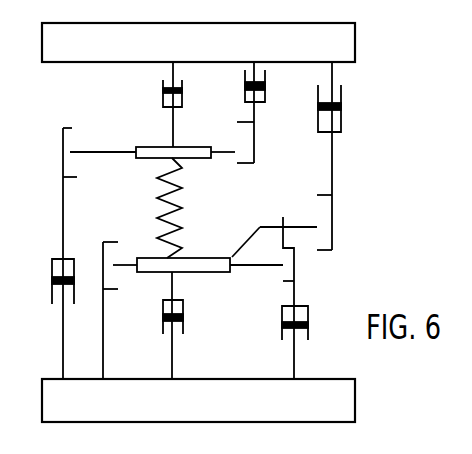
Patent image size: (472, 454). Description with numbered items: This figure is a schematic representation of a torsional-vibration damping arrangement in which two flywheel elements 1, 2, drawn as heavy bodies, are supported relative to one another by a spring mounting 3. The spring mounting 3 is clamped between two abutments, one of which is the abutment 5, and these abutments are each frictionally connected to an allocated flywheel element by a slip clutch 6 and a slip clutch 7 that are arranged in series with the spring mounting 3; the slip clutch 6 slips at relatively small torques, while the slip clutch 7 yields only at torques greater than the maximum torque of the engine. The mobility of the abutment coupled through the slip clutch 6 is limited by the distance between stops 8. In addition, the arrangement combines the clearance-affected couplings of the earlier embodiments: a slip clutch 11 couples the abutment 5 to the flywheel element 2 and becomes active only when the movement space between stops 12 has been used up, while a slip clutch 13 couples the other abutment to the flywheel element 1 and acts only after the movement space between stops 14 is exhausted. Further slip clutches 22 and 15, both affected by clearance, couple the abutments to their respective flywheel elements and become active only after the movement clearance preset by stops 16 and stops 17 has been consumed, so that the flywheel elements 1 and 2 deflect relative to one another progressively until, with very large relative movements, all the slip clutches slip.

The flywheel element 1 is at (343, 53).
The flywheel element 2 is at (344, 410).
The spring mounting 3 is at (178, 203).
The abutment 5 is at (186, 147).
The slip clutch 6 is at (183, 320).
The slip clutch 7 is at (182, 91).
The stops 8 is at (118, 242).
The slip clutch 11 is at (52, 287).
The stops 12 is at (72, 128).
The slip clutch 13 is at (341, 108).
The stops 14 is at (317, 195).
The slip clutch 15 is at (265, 88).
The stops 16 is at (268, 296).
The stops 17 is at (240, 121).
The slip clutch 22 is at (308, 326).